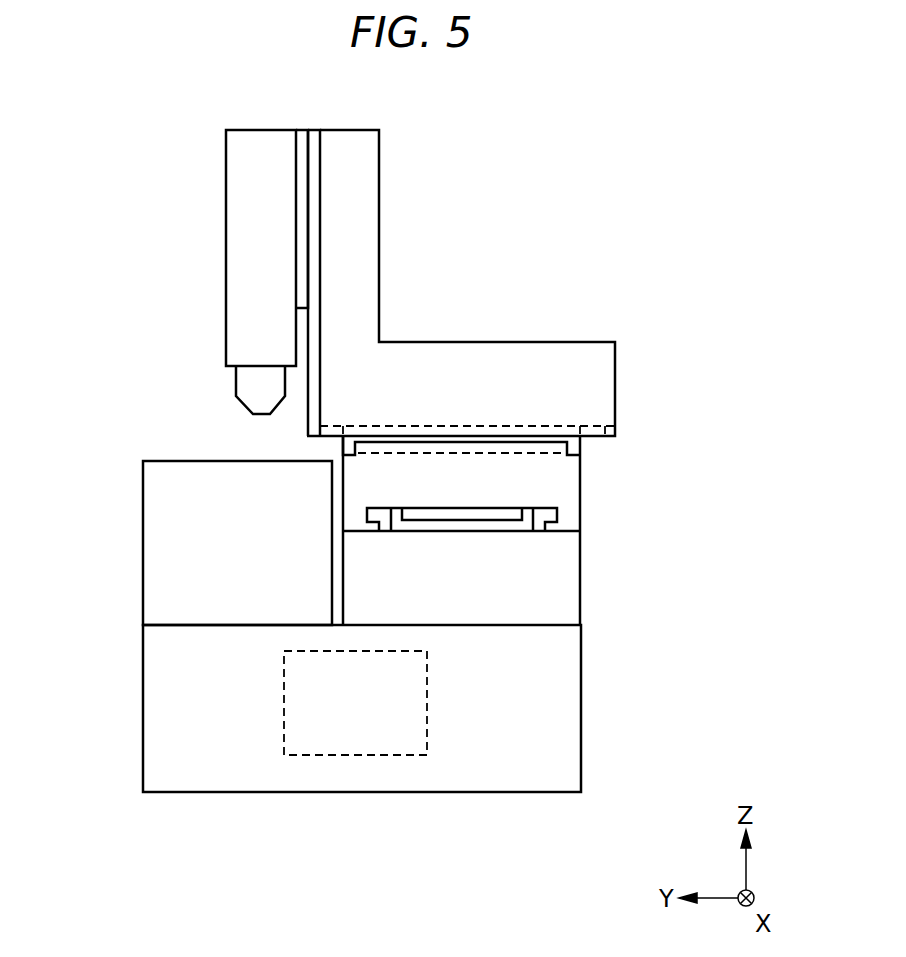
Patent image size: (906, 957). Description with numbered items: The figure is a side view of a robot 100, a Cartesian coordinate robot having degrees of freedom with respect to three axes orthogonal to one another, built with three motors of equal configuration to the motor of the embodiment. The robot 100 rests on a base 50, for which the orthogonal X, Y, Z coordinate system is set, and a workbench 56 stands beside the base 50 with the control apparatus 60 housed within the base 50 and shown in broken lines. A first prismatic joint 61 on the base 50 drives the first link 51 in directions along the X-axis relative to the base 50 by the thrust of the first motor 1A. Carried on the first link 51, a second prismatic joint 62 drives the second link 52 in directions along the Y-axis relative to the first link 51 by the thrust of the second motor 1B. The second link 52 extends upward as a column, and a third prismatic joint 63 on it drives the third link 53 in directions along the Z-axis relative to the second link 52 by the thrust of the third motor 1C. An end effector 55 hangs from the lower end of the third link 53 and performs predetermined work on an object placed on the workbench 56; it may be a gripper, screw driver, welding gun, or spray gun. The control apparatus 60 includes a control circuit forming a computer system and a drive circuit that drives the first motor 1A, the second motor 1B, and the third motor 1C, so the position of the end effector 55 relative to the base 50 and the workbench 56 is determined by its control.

The robot 100 is at (573, 141).
The third link 53 is at (227, 191).
The third motor 1C is at (301, 190).
The third prismatic joint 63 is at (313, 262).
The second link 52 is at (617, 372).
The second prismatic joint 62 is at (620, 431).
The end effector 55 is at (236, 380).
The first link 51 is at (582, 472).
The second motor 1B is at (582, 450).
The workbench 56 is at (143, 532).
The base 50 is at (143, 700).
The first prismatic joint 61 is at (557, 513).
The first motor 1A is at (503, 515).
The control apparatus 60 is at (428, 699).